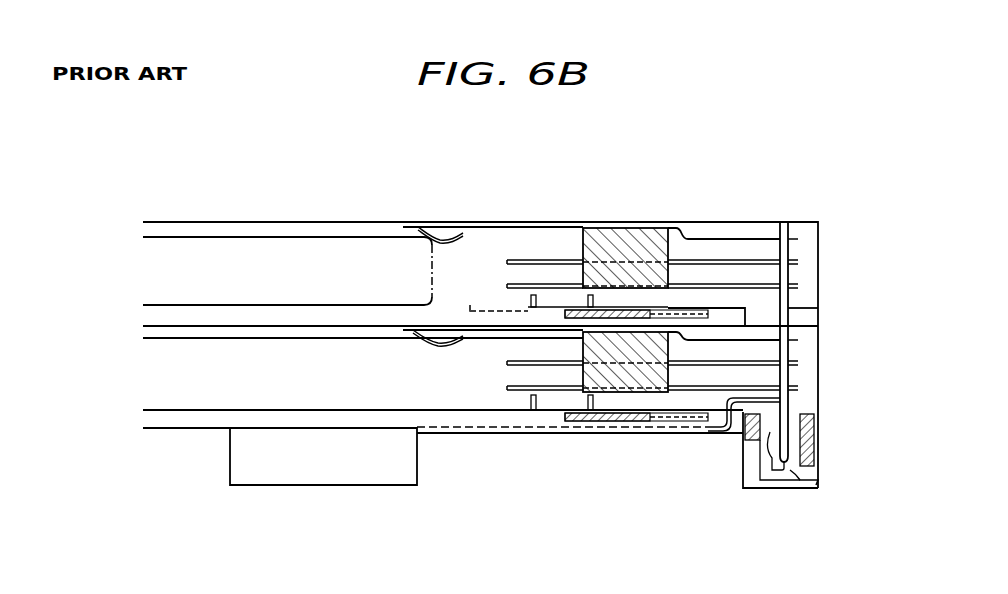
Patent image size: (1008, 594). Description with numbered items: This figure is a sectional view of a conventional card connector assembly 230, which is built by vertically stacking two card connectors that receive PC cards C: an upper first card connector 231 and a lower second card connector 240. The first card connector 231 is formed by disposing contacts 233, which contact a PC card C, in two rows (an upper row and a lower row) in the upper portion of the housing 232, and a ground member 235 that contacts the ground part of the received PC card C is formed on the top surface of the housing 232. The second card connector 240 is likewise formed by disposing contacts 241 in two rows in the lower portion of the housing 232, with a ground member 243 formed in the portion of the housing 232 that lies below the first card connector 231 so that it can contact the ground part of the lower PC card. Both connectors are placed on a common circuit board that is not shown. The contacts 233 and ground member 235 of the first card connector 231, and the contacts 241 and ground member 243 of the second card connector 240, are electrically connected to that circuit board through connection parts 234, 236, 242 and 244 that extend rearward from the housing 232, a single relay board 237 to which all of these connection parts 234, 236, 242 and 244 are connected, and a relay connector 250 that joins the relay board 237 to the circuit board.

The PC card C is at (265, 260).
The card connector assembly 230 is at (762, 140).
The first card connector 231 is at (615, 213).
The housing 232 is at (643, 223).
The contacts 233 is at (578, 288).
The connection part 234 is at (738, 288).
The ground member 235 is at (437, 227).
The connection part 236 is at (757, 237).
The relay board 237 is at (785, 326).
The second card connector 240 is at (572, 440).
The contacts 241 is at (517, 397).
The connection part 242 is at (708, 392).
The ground member 243 is at (416, 341).
The connection part 244 is at (752, 347).
The relay connector 250 is at (805, 444).